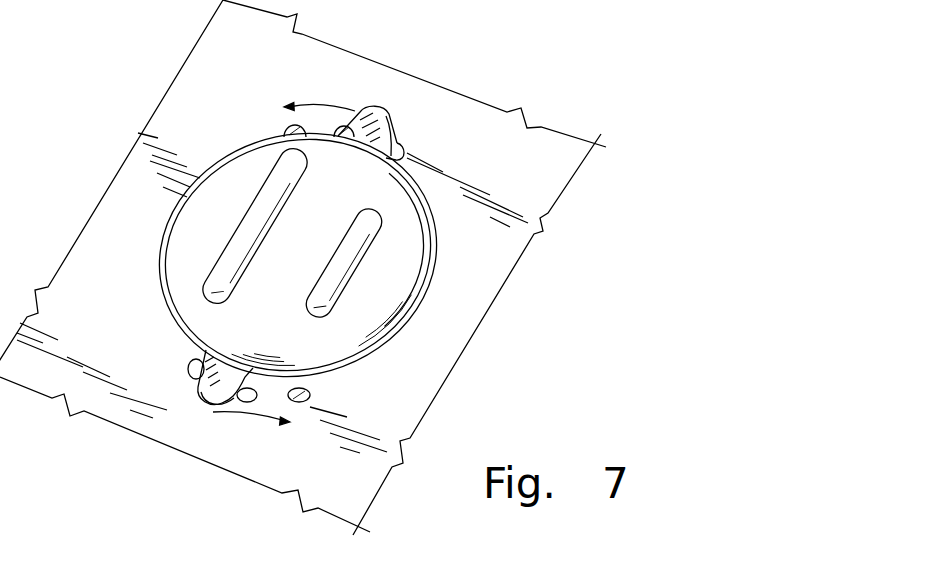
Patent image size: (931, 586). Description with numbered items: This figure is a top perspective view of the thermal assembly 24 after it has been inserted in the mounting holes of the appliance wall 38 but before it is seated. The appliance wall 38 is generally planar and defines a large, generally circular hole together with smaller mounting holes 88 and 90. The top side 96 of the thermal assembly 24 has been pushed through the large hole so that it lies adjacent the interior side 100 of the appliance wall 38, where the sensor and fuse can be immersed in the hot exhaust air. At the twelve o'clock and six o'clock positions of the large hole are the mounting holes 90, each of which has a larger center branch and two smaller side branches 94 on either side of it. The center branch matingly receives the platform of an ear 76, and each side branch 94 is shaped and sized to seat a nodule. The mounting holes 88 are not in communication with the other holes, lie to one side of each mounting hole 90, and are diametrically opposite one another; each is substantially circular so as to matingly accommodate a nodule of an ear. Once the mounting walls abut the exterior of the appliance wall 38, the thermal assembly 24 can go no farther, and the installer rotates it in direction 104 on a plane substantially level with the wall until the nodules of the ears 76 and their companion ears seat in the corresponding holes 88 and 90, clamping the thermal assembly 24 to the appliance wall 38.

The thermal assembly 24 is at (373, 287).
The appliance wall 38 is at (187, 107).
The ear 76 is at (375, 133).
The mounting hole 88 is at (284, 130).
The mounting hole 90 is at (403, 120).
The side branch 94 is at (403, 147).
The top side 96 is at (282, 255).
The interior side 100 is at (544, 183).
The direction 104 is at (322, 104).